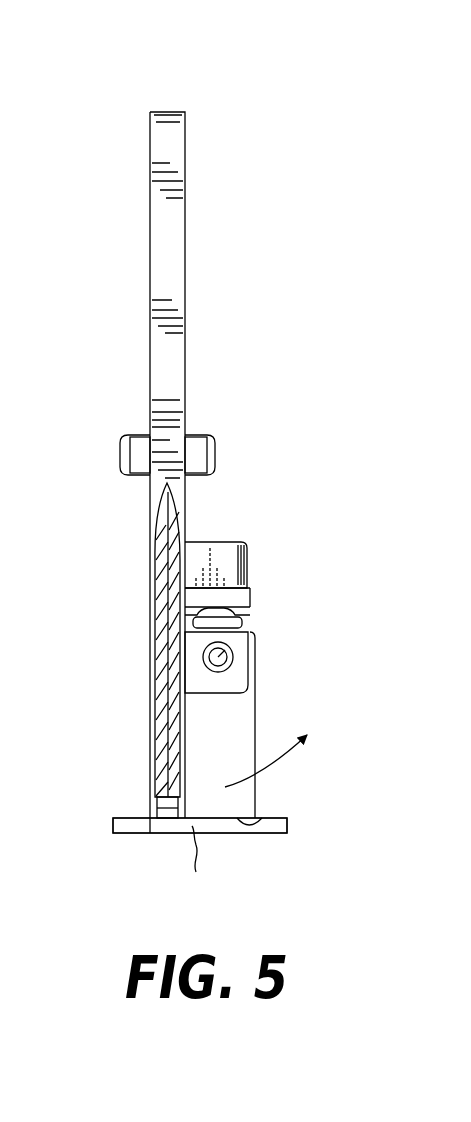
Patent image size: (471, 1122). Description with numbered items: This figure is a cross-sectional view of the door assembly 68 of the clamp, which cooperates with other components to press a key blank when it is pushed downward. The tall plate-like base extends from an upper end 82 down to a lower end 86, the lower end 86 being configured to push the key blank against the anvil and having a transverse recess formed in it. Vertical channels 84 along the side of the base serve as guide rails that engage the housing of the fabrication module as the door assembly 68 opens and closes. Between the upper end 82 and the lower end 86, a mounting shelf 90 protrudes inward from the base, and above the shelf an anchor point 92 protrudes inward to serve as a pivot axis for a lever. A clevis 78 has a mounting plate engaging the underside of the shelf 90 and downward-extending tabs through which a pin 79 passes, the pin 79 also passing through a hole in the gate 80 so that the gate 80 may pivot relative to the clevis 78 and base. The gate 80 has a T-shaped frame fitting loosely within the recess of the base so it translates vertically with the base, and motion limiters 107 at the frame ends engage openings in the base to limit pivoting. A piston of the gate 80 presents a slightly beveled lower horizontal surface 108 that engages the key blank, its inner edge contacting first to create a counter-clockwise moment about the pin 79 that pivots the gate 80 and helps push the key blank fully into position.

The door assembly 68 is at (240, 58).
The upper end 82 is at (216, 146).
The anchor points 92 is at (200, 445).
The vertical channels 84 is at (178, 514).
The mounting shelf 90 is at (226, 550).
The clevis 78 is at (240, 642).
The pin 79 is at (222, 662).
The gate 80 is at (232, 735).
The motion limiters 107 is at (156, 812).
The lower horizontal surface 108 is at (246, 828).
The lower end 86 is at (125, 808).